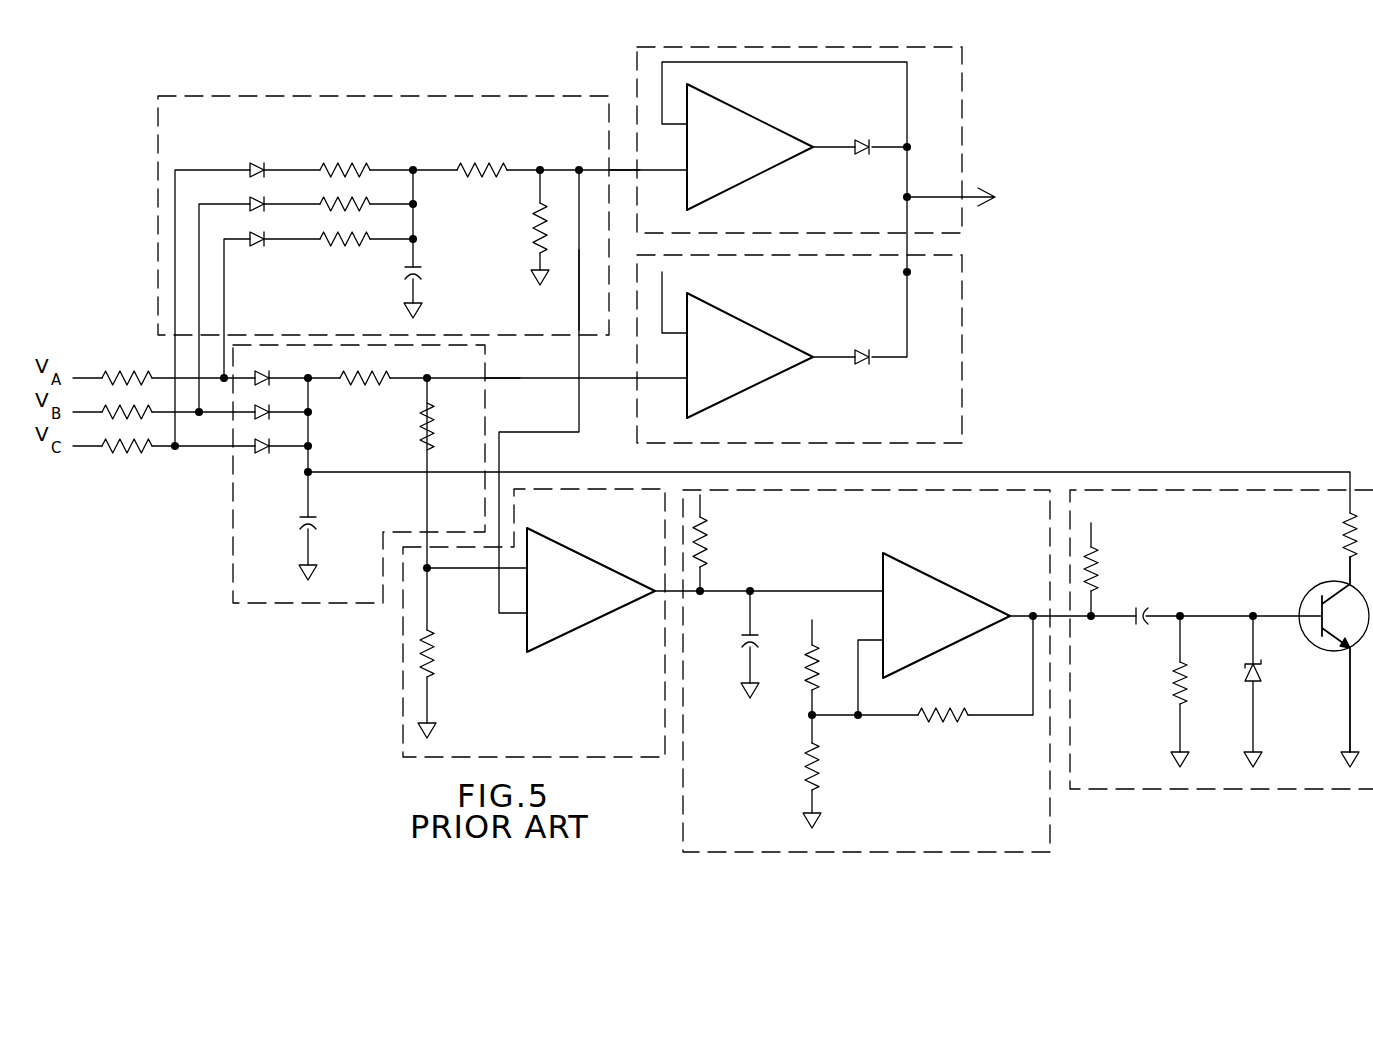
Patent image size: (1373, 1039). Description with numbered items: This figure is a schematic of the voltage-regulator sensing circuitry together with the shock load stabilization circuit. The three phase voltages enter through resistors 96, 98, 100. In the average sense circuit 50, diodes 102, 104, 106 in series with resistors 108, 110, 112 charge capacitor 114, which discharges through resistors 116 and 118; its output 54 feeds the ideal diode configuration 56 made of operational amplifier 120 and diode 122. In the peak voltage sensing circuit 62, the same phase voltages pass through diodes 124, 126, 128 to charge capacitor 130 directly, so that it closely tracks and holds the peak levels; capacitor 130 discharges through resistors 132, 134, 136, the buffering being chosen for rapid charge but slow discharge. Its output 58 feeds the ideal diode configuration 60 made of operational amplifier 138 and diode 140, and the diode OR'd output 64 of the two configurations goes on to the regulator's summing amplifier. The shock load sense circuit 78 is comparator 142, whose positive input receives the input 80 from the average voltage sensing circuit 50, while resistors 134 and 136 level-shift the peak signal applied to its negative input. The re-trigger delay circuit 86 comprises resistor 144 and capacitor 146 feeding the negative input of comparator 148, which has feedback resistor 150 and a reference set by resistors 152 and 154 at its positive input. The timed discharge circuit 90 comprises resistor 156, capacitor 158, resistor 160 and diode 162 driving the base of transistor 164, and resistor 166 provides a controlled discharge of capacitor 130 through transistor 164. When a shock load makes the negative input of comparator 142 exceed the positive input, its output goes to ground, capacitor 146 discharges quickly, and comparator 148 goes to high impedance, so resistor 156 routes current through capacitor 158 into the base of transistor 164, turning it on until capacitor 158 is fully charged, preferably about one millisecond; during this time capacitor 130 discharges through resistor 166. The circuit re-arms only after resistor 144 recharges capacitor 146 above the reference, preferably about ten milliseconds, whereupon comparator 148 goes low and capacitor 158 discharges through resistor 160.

The average sense circuit 50 is at (185, 105).
The output of the average sensing circuit 54 is at (630, 169).
The ideal diode configuration 56 is at (940, 93).
The output of the peak voltage sensing circuit 58 is at (498, 380).
The ideal diode configuration 60 is at (943, 420).
The peak voltage sensing circuit 62 is at (280, 597).
The diode OR'd output 64 is at (943, 197).
The shock load sense circuit 78 is at (415, 703).
The input from the average voltage sensing circuit 80 is at (578, 307).
The re-trigger delay circuit 86 is at (1035, 800).
The timed discharge circuit 90 is at (1285, 780).
The resistor 96 is at (128, 403).
The resistor 98 is at (147, 373).
The resistor 100 is at (138, 453).
The diode 102 is at (250, 160).
The diode 104 is at (248, 197).
The diode 106 is at (248, 233).
The resistor 108 is at (330, 158).
The resistor 110 is at (328, 208).
The resistor 112 is at (330, 243).
The capacitor 114 is at (423, 280).
The resistor 116 is at (478, 162).
The resistor 118 is at (532, 213).
The operational amplifier 120 is at (770, 138).
The diode 122 is at (863, 160).
The diode 124 is at (268, 368).
The diode 126 is at (255, 415).
The diode 128 is at (268, 457).
The capacitor 130 is at (310, 513).
The resistor 132 is at (370, 377).
The resistor 134 is at (430, 428).
The resistor 136 is at (433, 652).
The operational amplifier 138 is at (777, 343).
The diode 140 is at (867, 367).
The comparator 142 is at (595, 570).
The resistor 144 is at (703, 548).
The capacitor 146 is at (757, 635).
The comparator 148 is at (940, 590).
The feedback resistor 150 is at (937, 723).
The resistor 152 is at (803, 673).
The resistor 154 is at (817, 757).
The resistor 156 is at (1095, 560).
The capacitor 158 is at (1138, 600).
The resistor 160 is at (1178, 680).
The diode 162 is at (1260, 672).
The transistor 164 is at (1322, 596).
The resistor 166 is at (1331, 580).